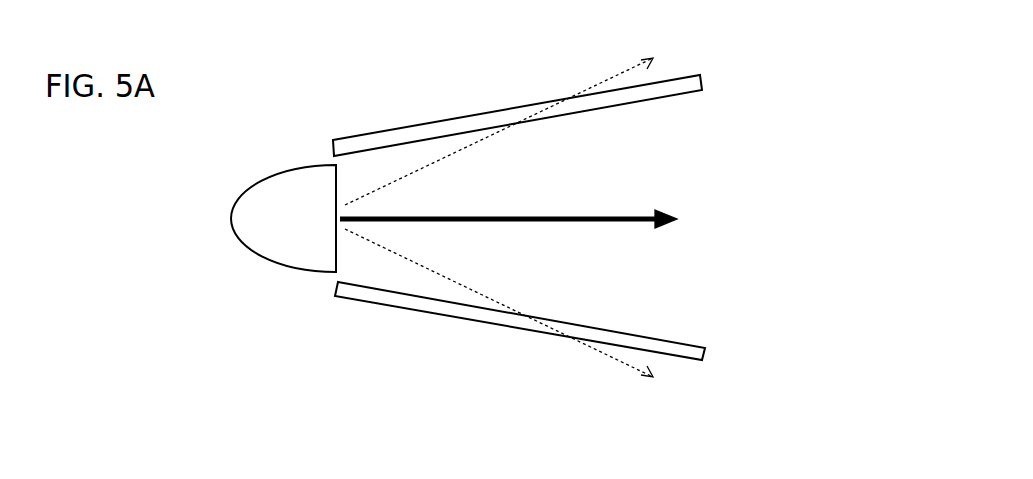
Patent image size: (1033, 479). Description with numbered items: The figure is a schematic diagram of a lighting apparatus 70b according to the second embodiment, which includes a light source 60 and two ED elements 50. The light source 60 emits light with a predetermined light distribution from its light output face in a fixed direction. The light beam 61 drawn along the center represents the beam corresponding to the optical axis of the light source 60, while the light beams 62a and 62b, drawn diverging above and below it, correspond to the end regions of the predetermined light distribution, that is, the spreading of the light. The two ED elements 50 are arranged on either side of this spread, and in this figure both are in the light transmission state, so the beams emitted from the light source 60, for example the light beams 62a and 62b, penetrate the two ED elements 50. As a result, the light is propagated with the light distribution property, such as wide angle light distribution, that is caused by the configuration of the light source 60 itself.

The ED element 50 is at (713, 85).
The light source 60 is at (258, 168).
The light beam 61 is at (667, 205).
The light beam 62a is at (655, 50).
The light beam 62b is at (653, 385).
The lighting apparatus 70b is at (275, 320).